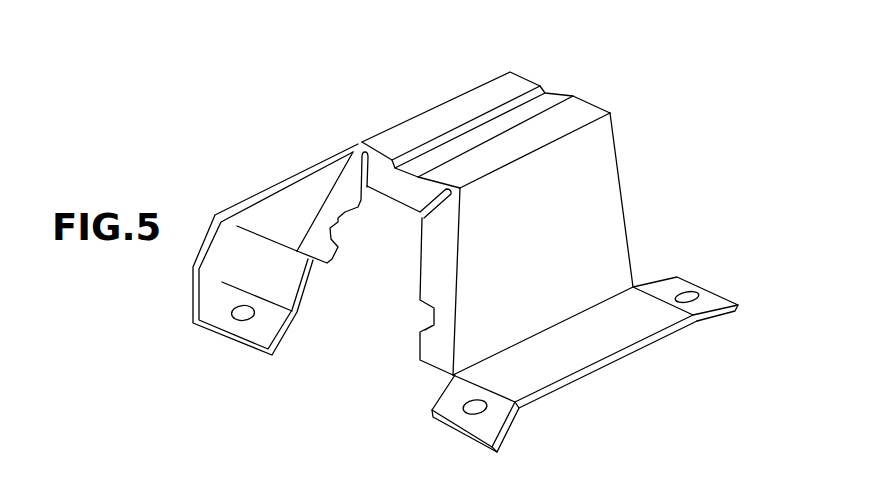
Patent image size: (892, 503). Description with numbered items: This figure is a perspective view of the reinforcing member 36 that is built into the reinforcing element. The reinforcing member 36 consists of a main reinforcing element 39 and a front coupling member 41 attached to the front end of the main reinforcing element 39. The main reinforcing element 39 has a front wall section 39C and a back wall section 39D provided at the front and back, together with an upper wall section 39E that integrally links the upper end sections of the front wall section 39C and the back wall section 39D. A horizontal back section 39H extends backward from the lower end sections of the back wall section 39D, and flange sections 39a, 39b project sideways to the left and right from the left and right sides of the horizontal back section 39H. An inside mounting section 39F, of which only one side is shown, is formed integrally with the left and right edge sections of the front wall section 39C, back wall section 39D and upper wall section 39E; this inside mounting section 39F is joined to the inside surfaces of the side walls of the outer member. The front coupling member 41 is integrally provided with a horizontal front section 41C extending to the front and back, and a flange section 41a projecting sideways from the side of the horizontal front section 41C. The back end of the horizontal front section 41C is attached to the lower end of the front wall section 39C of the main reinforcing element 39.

The reinforcing member 36 is at (356, 80).
The main reinforcing element 39 is at (644, 122).
The upper wall section 39E is at (453, 112).
The back wall section 39D is at (580, 195).
The inside mounting section 39F is at (432, 273).
The front wall section 39C is at (370, 207).
The horizontal back section 39H is at (590, 342).
The flange section 39b is at (707, 297).
The flange section 39a is at (448, 415).
The front coupling member 41 is at (215, 193).
The flange section 41a is at (227, 320).
The horizontal front section 41C is at (297, 213).